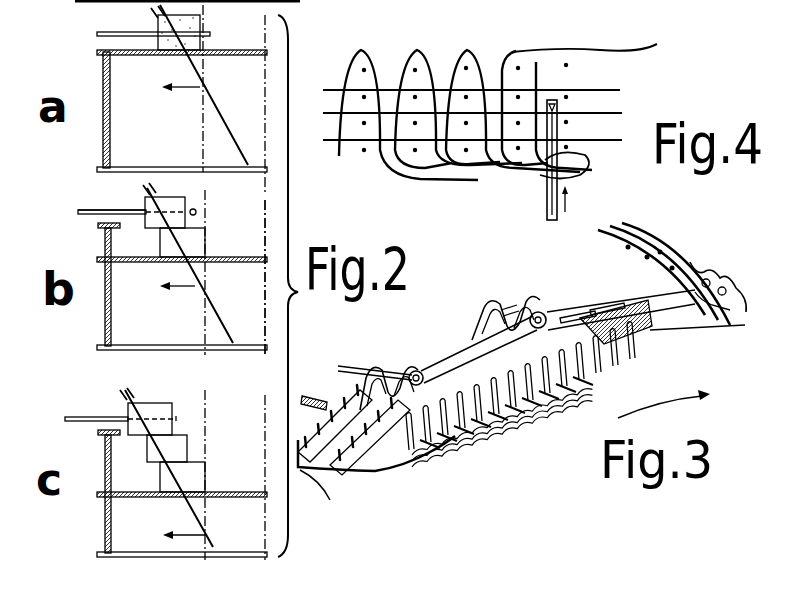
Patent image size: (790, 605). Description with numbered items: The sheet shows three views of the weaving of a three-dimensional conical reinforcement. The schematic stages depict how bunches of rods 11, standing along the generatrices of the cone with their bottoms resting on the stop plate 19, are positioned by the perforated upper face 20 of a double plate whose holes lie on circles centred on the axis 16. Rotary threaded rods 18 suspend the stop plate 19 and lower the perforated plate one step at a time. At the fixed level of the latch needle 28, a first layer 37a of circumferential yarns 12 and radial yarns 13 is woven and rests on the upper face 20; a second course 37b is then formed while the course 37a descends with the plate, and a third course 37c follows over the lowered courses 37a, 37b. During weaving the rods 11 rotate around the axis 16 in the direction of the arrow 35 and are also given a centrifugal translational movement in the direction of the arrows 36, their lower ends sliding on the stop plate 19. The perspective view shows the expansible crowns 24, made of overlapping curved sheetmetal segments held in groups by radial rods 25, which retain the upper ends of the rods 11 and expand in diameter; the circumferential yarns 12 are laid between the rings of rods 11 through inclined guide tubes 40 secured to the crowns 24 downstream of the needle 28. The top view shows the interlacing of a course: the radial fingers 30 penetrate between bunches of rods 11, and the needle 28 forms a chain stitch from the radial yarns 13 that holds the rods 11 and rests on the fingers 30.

In FIG. 4, the rods 11 is at (414, 71).
In FIG. 3, the rods 11 is at (327, 447).
In FIG. 4, the circumferential yarns 12 is at (613, 116).
In FIG. 3, the circumferential yarns 12 is at (622, 231).
In FIG. 4, the radial yarns 13 is at (489, 68).
In FIG. 3, the radial yarns 13 is at (408, 458).
In FIG. 2, the axis 16 is at (263, 301).
In FIG. 2, the threaded rods 18 is at (112, 316).
In FIG. 2, the stop plate 19 is at (126, 166).
In FIG. 2, the upper face of perforated double plate 20 is at (227, 60).
In FIG. 2, the expansible crowns 24 is at (150, 14).
In FIG. 3, the expansible crowns 24 is at (474, 341).
In FIG. 3, the radial rods 25 is at (482, 298).
In FIG. 2, the latch needle 28 is at (88, 211).
In FIG. 4, the latch needle 28 is at (545, 211).
In FIG. 3, the latch needle 28 is at (458, 433).
In FIG. 3, the radial fingers 30 is at (400, 458).
In FIG. 3, the arrow indicating rotation direction 35 is at (664, 399).
In FIG. 2, the arrows indicating translational movement 36 is at (183, 311).
In FIG. 2, the first layer of yarns 37a is at (207, 27).
In FIG. 2, the second course 37b is at (185, 206).
In FIG. 2, the third course 37c is at (165, 409).
In FIG. 3, the guide tubes 40 is at (712, 318).